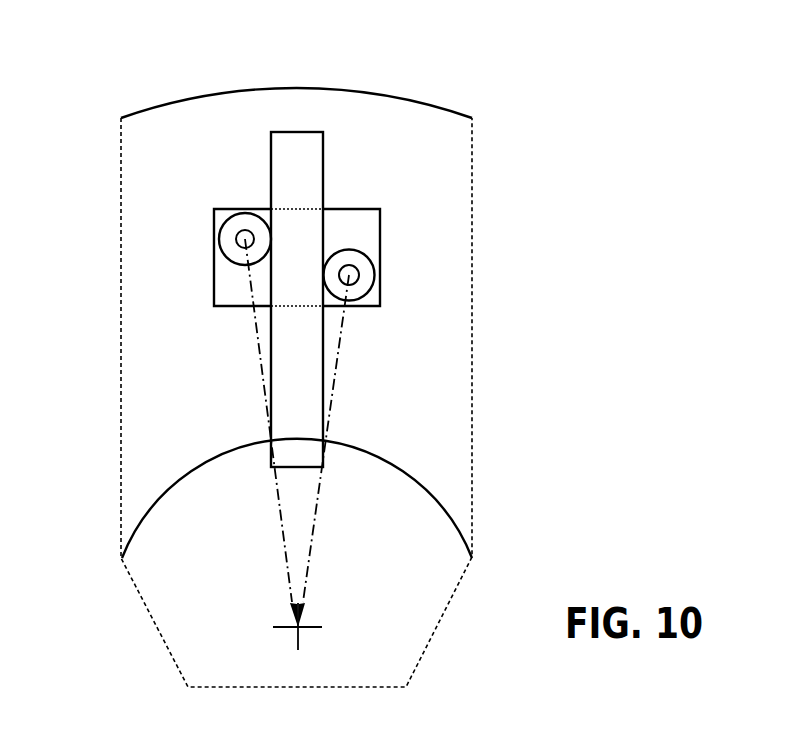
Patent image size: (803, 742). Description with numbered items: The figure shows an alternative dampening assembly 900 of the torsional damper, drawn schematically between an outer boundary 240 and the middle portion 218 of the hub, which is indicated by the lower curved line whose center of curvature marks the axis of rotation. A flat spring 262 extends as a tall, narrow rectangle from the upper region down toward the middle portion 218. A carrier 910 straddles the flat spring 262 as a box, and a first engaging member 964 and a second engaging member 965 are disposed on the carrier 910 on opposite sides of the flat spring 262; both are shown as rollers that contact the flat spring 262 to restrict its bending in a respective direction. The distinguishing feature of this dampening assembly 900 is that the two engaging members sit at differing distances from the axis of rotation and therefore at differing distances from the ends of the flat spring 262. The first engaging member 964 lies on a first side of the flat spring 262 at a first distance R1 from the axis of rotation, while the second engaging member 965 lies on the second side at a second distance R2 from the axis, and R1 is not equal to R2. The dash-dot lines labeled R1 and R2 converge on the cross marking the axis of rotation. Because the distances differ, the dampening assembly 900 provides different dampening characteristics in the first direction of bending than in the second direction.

The outer wall / top arc of housing 240 is at (211, 90).
The middle portion 218 is at (371, 454).
The alternative dampening assembly 900 is at (184, 243).
The flat spring 262 is at (271, 147).
The carrier 910 is at (352, 208).
The second engaging member 965 is at (220, 228).
The first engaging member 964 is at (375, 283).
The second distance R2 is at (258, 352).
The first distance R1 is at (336, 377).